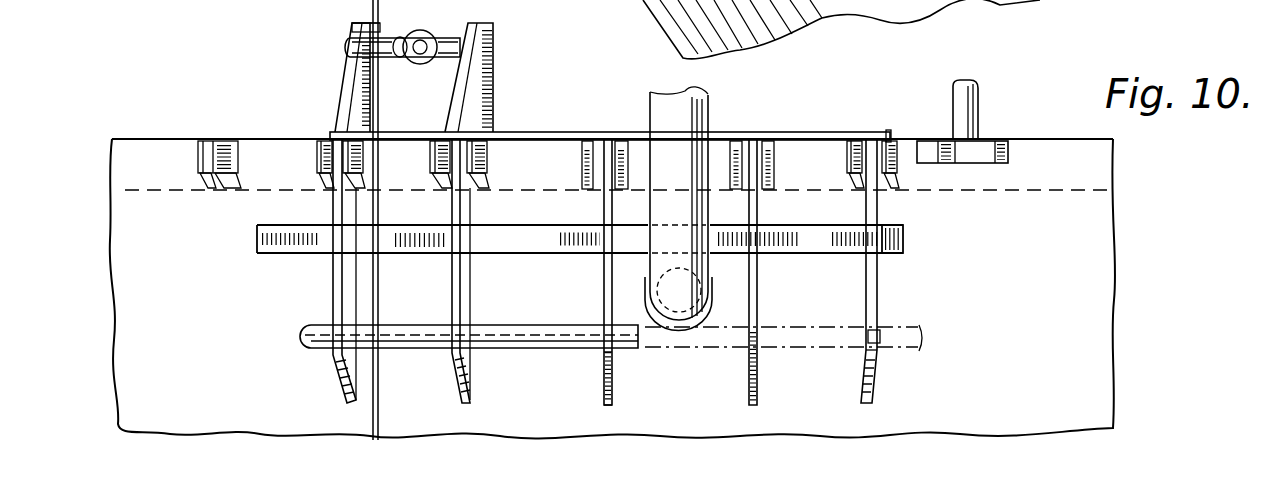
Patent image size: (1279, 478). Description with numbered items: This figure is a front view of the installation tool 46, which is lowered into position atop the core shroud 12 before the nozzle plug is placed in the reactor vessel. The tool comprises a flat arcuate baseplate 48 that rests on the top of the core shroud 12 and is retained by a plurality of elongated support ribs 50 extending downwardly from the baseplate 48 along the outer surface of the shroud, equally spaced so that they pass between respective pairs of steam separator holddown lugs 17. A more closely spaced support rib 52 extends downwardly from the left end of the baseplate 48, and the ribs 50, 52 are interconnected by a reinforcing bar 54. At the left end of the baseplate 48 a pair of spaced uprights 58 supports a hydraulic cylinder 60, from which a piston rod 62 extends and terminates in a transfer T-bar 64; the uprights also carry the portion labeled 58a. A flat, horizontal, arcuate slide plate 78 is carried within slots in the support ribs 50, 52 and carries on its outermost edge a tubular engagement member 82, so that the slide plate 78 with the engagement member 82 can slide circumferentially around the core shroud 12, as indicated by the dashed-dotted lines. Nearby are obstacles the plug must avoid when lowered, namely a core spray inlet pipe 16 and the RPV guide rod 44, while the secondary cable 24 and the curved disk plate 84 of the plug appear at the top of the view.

The core shroud 12 is at (1035, 139).
The core spray inlet pipe 16 is at (712, 105).
The steam separator holddown lugs 17 is at (312, 157).
The secondary cable 24 is at (413, 274).
The RPV guide rod 44 is at (979, 100).
The installation tool 46 is at (610, 104).
The baseplate 48 is at (572, 133).
The elongated support ribs 50 is at (603, 278).
The support rib 52 is at (332, 290).
The reinforcing bar 54 is at (907, 248).
The uprights 58 is at (360, 103).
The bracket flange 58a is at (347, 80).
The hydraulic cylinder 60 is at (452, 10).
The piston rod 62 is at (418, 52).
The transfer T-bar 64 is at (345, 45).
The slide plate 78 is at (507, 333).
The tubular engagement member 82 is at (578, 345).
The disk plate 84 is at (592, 0).